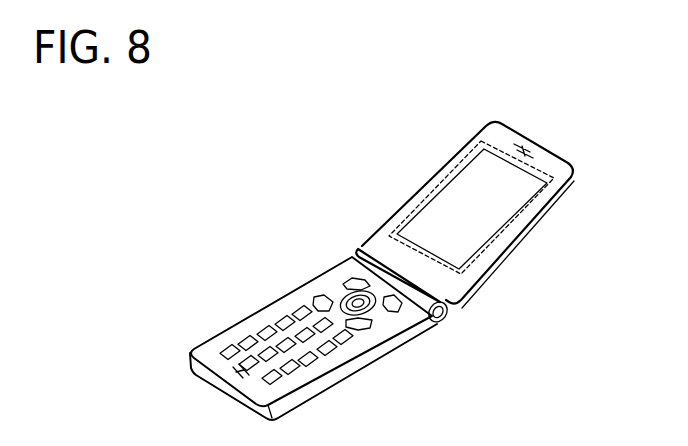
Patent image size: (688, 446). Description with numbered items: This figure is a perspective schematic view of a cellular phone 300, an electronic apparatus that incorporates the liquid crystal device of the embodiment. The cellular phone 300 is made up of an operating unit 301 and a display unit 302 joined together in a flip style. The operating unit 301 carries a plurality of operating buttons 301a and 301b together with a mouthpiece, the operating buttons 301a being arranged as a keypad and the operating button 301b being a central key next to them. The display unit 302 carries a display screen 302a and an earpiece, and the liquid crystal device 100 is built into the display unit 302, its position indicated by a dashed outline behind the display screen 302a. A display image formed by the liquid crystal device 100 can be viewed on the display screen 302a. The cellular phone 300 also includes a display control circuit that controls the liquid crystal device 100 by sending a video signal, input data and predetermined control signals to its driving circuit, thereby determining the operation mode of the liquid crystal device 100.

The liquid crystal device 100 is at (501, 147).
The cellular phone 300 is at (222, 118).
The operating unit 301 is at (254, 328).
The operating button 301a is at (330, 350).
The operating button 301b is at (360, 303).
The display unit 302 is at (518, 233).
The display screen 302a is at (452, 210).